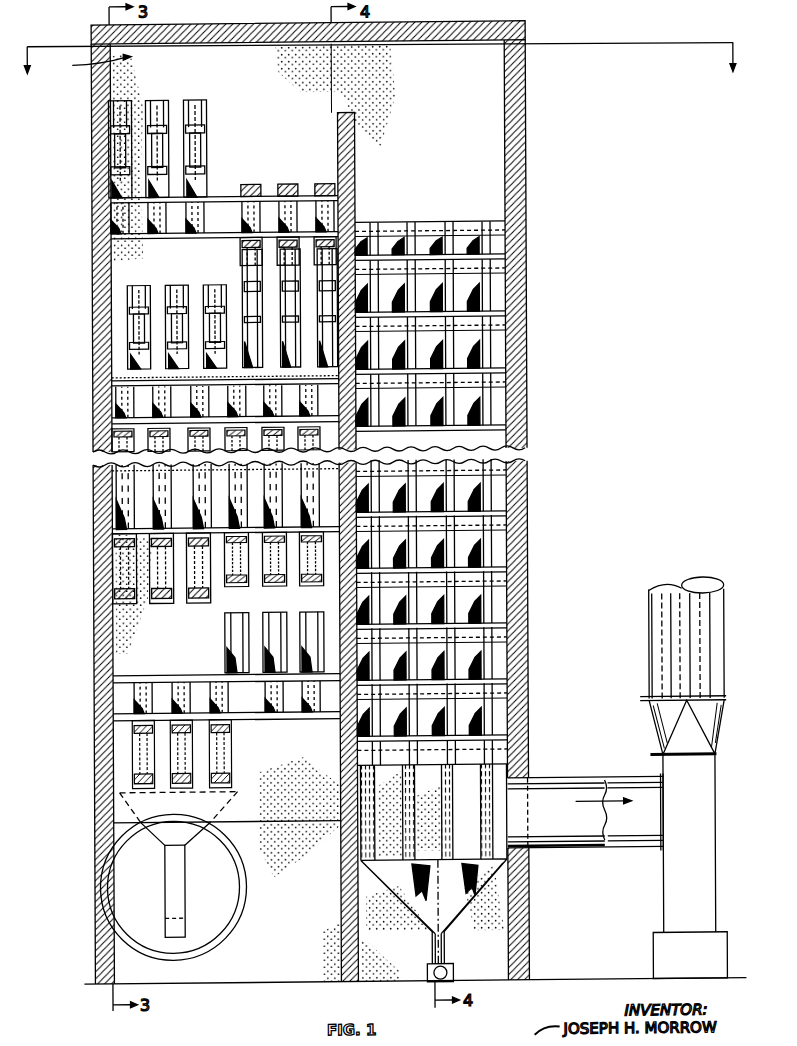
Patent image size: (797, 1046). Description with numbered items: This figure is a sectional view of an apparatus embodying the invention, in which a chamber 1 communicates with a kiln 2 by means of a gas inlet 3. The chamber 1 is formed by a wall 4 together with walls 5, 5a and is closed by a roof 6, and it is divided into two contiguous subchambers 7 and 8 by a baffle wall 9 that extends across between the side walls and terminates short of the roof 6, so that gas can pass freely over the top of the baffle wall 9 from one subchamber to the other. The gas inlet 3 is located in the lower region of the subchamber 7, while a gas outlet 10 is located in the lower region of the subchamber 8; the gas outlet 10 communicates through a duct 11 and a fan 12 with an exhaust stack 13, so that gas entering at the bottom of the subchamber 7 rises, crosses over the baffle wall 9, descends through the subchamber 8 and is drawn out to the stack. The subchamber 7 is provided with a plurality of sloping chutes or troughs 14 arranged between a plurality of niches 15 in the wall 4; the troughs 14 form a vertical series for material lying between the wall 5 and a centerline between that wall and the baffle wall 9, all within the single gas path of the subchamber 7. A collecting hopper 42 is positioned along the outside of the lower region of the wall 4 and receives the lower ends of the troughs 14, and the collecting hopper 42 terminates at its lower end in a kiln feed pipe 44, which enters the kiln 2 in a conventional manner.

The chamber 1 is at (230, 58).
The kiln 2 is at (381, 70).
The gas inlet 3 is at (236, 924).
The wall 4 is at (95, 62).
The wall 5 is at (99, 294).
The wall 5a is at (521, 333).
The roof 6 is at (190, 26).
The subchamber 7 is at (196, 530).
The subchamber 8 is at (431, 543).
The baffle wall 9 is at (344, 116).
The gas outlet 10 is at (509, 826).
The duct 11 is at (552, 853).
The fan 12 is at (710, 833).
The exhaust stack 13 is at (646, 632).
The sloping chutes or troughs 14 is at (110, 523).
The niches 15 is at (110, 138).
The collecting hopper 42 is at (191, 836).
The kiln feed pipe 44 is at (158, 885).